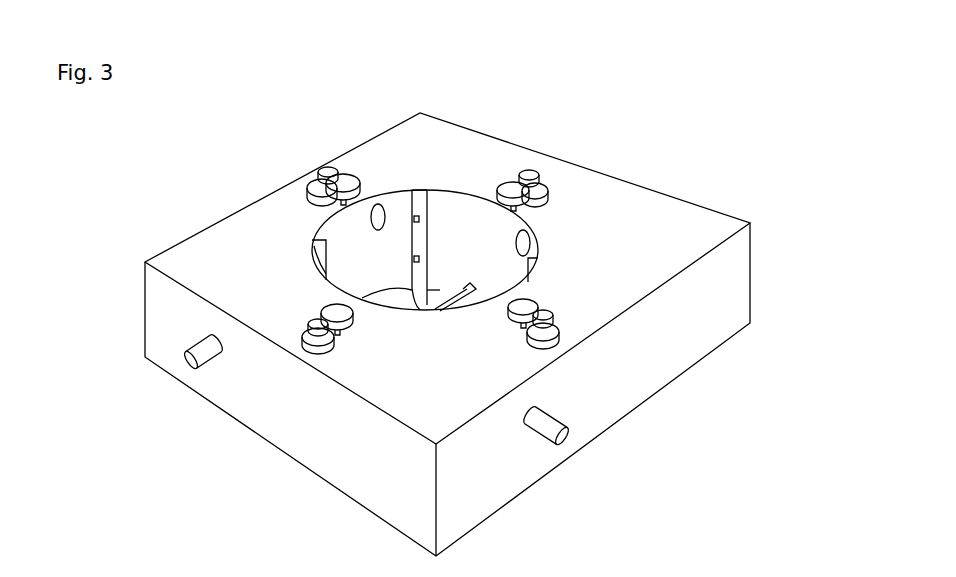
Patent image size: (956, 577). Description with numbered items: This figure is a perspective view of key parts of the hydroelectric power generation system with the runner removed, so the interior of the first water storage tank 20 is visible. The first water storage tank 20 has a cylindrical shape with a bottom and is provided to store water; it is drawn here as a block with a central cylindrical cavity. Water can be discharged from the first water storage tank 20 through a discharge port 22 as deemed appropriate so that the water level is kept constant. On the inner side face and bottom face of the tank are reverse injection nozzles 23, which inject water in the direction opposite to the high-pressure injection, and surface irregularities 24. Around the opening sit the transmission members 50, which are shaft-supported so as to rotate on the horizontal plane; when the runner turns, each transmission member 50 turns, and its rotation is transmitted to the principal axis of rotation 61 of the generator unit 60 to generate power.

The first water storage tank 20 is at (393, 295).
The discharge port 22 is at (190, 362).
The reverse injection nozzle 23 is at (464, 289).
The surface irregularities 24 is at (419, 192).
The transmission member 50 is at (509, 188).
The generator unit 60 is at (540, 185).
The principal axis of rotation 61 is at (317, 338).